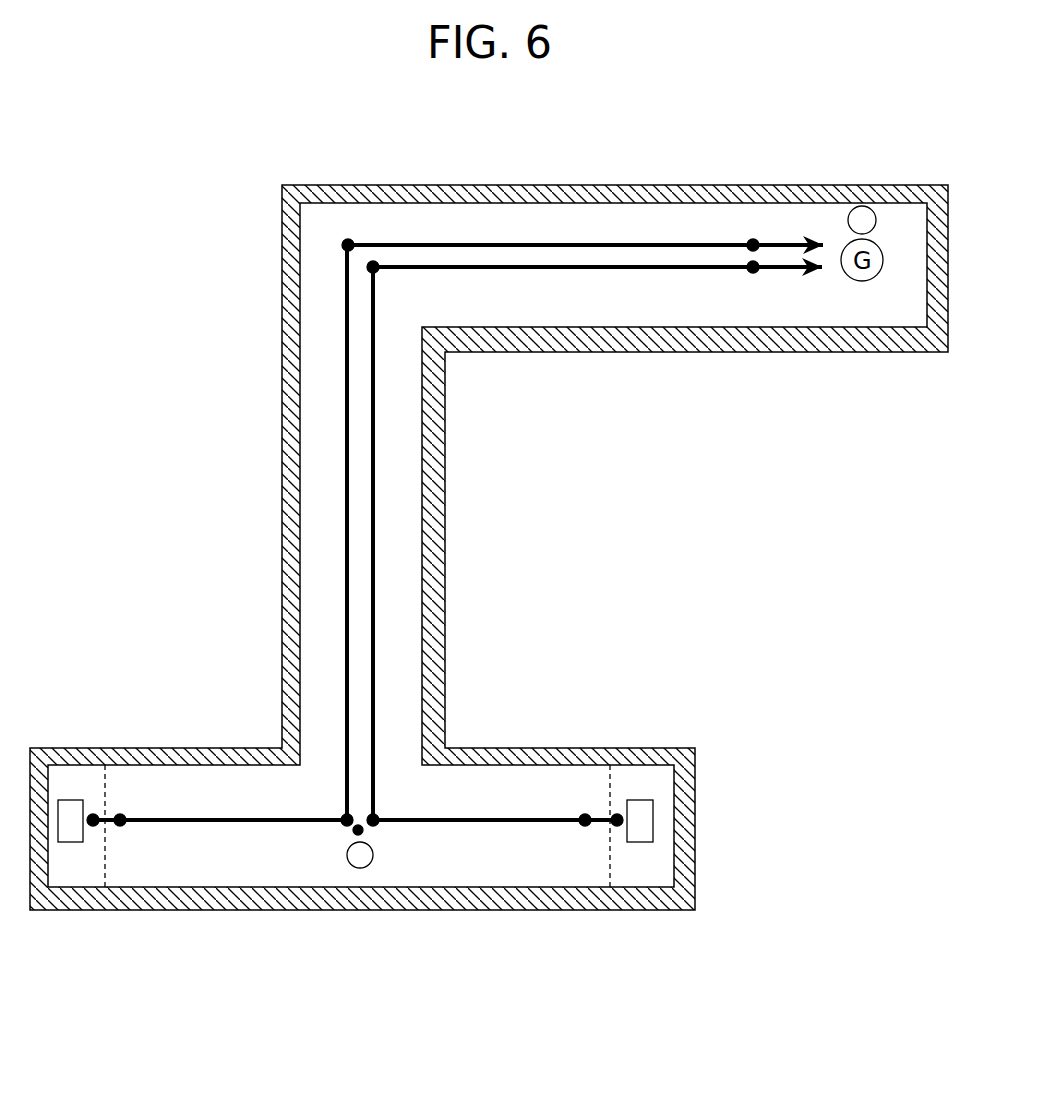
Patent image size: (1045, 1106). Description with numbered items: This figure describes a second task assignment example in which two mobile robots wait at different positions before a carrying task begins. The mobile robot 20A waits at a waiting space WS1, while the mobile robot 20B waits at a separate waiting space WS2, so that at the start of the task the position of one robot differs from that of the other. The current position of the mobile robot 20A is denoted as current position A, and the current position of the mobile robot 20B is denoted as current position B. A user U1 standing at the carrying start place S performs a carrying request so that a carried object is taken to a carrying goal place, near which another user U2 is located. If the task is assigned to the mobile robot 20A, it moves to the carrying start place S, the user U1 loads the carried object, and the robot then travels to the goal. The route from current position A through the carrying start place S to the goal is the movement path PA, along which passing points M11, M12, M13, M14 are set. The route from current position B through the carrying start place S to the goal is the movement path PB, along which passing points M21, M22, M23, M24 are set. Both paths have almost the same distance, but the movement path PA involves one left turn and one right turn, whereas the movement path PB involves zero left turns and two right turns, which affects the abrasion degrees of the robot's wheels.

The waiting space WS1 is at (71, 776).
The waiting space WS2 is at (635, 776).
The mobile robot 20A is at (83, 843).
The mobile robot 20B is at (640, 843).
The movement path PA is at (347, 690).
The movement path PB is at (373, 690).
The current position A is at (97, 826).
The current position B is at (613, 826).
The carrying start place S is at (354, 836).
The passing point M11 is at (123, 815).
The passing point M12 is at (344, 815).
The passing point M13 is at (342, 245).
The passing point M14 is at (750, 240).
The passing point M21 is at (582, 815).
The passing point M22 is at (376, 815).
The passing point M23 is at (377, 272).
The passing point M24 is at (751, 273).
The user U1 is at (357, 869).
The user U2 is at (863, 204).